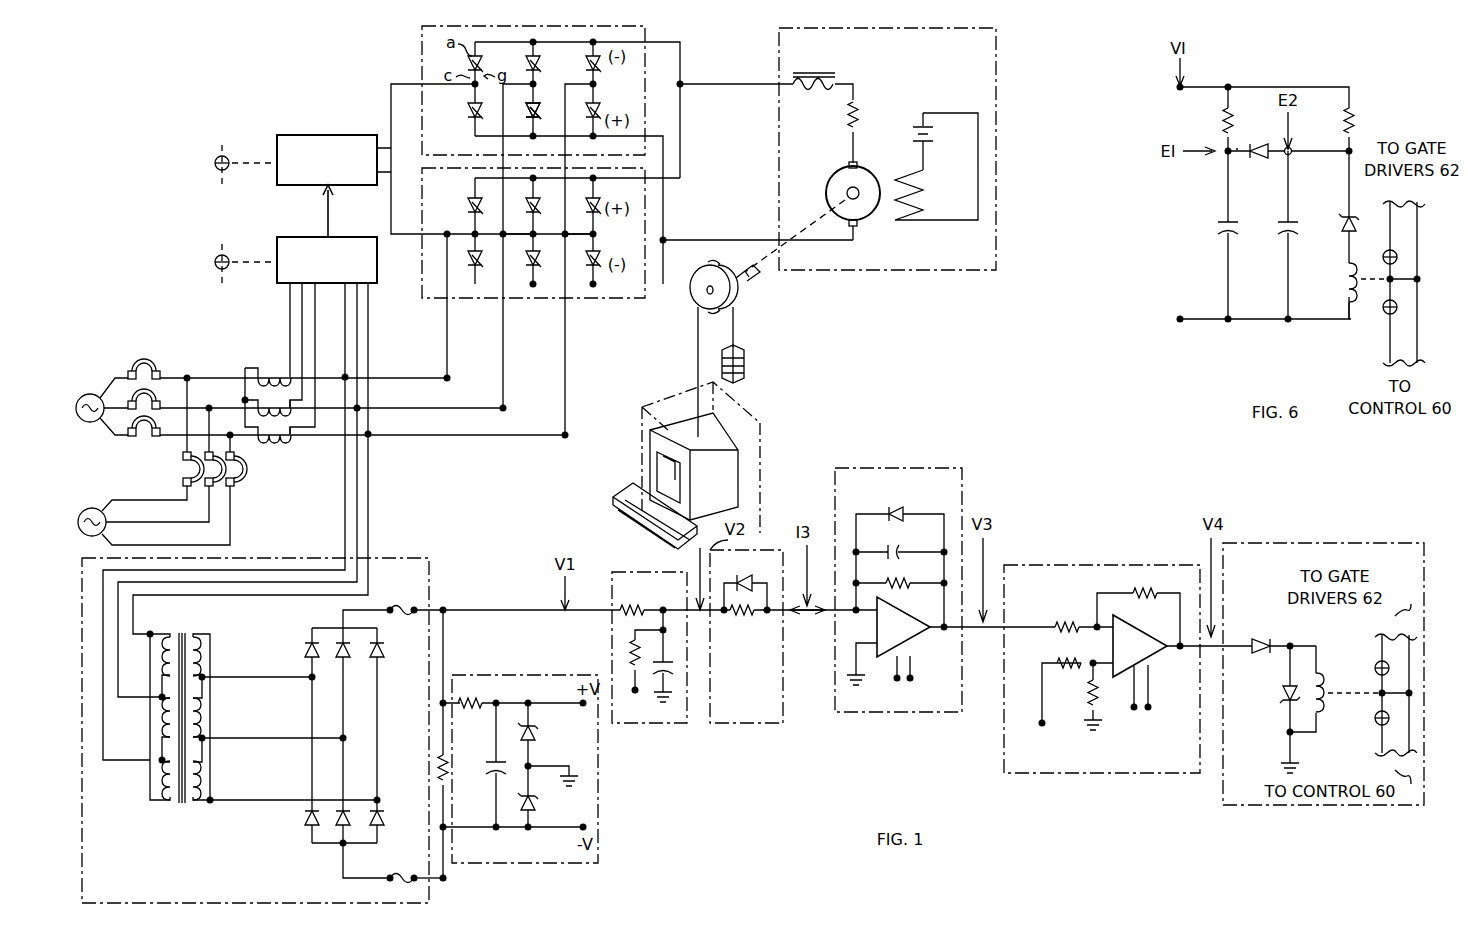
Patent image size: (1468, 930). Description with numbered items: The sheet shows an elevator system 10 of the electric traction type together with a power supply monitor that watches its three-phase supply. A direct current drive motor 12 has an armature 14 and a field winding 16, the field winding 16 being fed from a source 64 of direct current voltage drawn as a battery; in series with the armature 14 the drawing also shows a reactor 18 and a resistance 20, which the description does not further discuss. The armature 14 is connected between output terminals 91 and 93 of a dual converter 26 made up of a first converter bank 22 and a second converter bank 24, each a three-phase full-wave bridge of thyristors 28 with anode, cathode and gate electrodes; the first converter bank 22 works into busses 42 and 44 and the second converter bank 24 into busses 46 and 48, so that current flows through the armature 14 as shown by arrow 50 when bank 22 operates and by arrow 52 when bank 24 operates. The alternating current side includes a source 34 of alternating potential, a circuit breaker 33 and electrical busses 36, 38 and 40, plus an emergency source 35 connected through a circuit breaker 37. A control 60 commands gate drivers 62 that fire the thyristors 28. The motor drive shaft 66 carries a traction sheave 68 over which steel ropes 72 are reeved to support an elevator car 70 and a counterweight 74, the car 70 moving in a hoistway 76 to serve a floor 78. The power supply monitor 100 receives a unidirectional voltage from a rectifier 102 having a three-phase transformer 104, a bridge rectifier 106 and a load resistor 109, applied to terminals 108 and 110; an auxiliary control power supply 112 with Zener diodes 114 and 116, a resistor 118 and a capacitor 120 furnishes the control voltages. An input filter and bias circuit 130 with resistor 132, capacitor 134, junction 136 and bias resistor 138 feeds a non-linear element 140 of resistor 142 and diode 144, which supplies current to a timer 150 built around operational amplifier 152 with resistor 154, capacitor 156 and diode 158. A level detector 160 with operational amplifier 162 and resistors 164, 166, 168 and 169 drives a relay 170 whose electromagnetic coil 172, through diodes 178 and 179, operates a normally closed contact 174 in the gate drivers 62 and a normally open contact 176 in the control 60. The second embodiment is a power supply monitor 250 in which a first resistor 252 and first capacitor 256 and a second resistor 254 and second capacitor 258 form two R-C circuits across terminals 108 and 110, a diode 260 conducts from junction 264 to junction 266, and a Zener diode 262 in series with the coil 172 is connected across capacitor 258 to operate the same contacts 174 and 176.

In FIG. 1, the elevator system 10 is at (713, 169).
In FIG. 1, the direct current drive motor 12 is at (779, 53).
In FIG. 1, the armature 14 is at (841, 176).
In FIG. 1, the field winding 16 is at (888, 185).
In FIG. 1, the smoothing reactor 18 is at (835, 80).
In FIG. 1, the armature resistance 20 is at (856, 110).
In FIG. 1, the first converter bank 22 is at (422, 285).
In FIG. 1, the second converter bank 24 is at (422, 68).
In FIG. 1, the dual converter 26 is at (425, 178).
In FIG. 1, the thyristors 28 is at (620, 92).
In FIG. 1, the circuit breaker 33 is at (154, 368).
In FIG. 1, the source of alternating potential 34 is at (92, 394).
In FIG. 1, the emergency source of alternating potential 35 is at (92, 510).
In FIG. 1, the electrical bus 36 is at (450, 376).
In FIG. 1, the circuit breaker 37 is at (246, 464).
In FIG. 1, the electrical bus 38 is at (506, 406).
In FIG. 1, the electrical bus 40 is at (568, 433).
In FIG. 1, the bus 42 is at (538, 190).
In FIG. 1, the bus 44 is at (541, 261).
In FIG. 1, the bus 46 is at (536, 114).
In FIG. 1, the bus 48 is at (540, 46).
In FIG. 1, the arrow 50 is at (825, 105).
In FIG. 1, the arrow 52 is at (835, 243).
In FIG. 1, the control 60 is at (294, 238).
In FIG. 1, the gate drivers 62 is at (294, 136).
In FIG. 1, the source of direct current voltage 64 is at (918, 133).
In FIG. 1, the drive shaft 66 is at (757, 275).
In FIG. 1, the traction sheave 68 is at (692, 294).
In FIG. 1, the elevator car 70 is at (737, 478).
In FIG. 1, the steel ropes 72 is at (698, 336).
In FIG. 1, the counterweight 74 is at (741, 352).
In FIG. 1, the hoistway 76 is at (732, 394).
In FIG. 1, the floor 78 is at (618, 483).
In FIG. 1, the output terminal 91 is at (680, 84).
In FIG. 1, the output terminal 93 is at (663, 240).
In FIG. 1, the power supply monitor 100 is at (646, 756).
In FIG. 1, the rectifier 102 is at (301, 903).
In FIG. 1, the three-phase transformer 104 is at (173, 838).
In FIG. 1, the three-phase full-wave bridge rectifier 106 is at (258, 722).
In FIG. 1, the terminal 108 is at (447, 605).
In FIG. 6, the terminal 108 is at (1186, 84).
In FIG. 1, the load resistor 109 is at (440, 768).
In FIG. 1, the terminal 110 is at (447, 880).
In FIG. 6, the terminal 110 is at (1183, 316).
In FIG. 1, the auxiliary control power supply 112 is at (545, 864).
In FIG. 1, the first Zener diode 114 is at (533, 728).
In FIG. 1, the second Zener diode 116 is at (535, 803).
In FIG. 1, the resistor 118 is at (464, 708).
In FIG. 1, the capacitor 120 is at (496, 776).
In FIG. 1, the input filter and bias circuit 130 is at (660, 572).
In FIG. 1, the resistor 132 is at (646, 598).
In FIG. 1, the capacitor 134 is at (671, 679).
In FIG. 1, the junction 136 is at (662, 608).
In FIG. 1, the resistor 138 is at (633, 648).
In FIG. 1, the non-linear element 140 is at (738, 724).
In FIG. 1, the resistor 142 is at (745, 614).
In FIG. 1, the diode 144 is at (756, 576).
In FIG. 1, the timer 150 is at (936, 468).
In FIG. 1, the operational amplifier 152 is at (928, 638).
In FIG. 1, the resistor 154 is at (904, 584).
In FIG. 1, the capacitor 156 is at (902, 548).
In FIG. 1, the diode 158 is at (899, 512).
In FIG. 1, the level detector 160 is at (1110, 565).
In FIG. 1, the operational amplifier 162 is at (1159, 652).
In FIG. 1, the resistor 164 is at (1129, 592).
In FIG. 1, the resistor 166 is at (1070, 626).
In FIG. 1, the resistor 168 is at (1072, 663).
In FIG. 1, the resistor 169 is at (1088, 696).
In FIG. 1, the relay 170 is at (1328, 543).
In FIG. 6, the relay 170 is at (1316, 369).
In FIG. 1, the electromagnetic coil 172 is at (1322, 724).
In FIG. 6, the electromagnetic coil 172 is at (1350, 288).
In FIG. 6, the normally closed contact 174 is at (1388, 256).
In FIG. 6, the normally open contact 176 is at (1388, 316).
In FIG. 1, the diode 178 is at (1262, 646).
In FIG. 1, the diode 179 is at (1282, 696).
In FIG. 6, the power supply monitor 250 is at (1271, 82).
In FIG. 6, the first resistor 252 is at (1224, 124).
In FIG. 6, the second resistor 254 is at (1344, 124).
In FIG. 6, the first capacitor 256 is at (1223, 221).
In FIG. 6, the second capacitor 258 is at (1286, 221).
In FIG. 6, the diode 260 is at (1257, 158).
In FIG. 6, the Zener diode 262 is at (1345, 213).
In FIG. 6, the junction 264 is at (1292, 154).
In FIG. 6, the junction 266 is at (1237, 148).